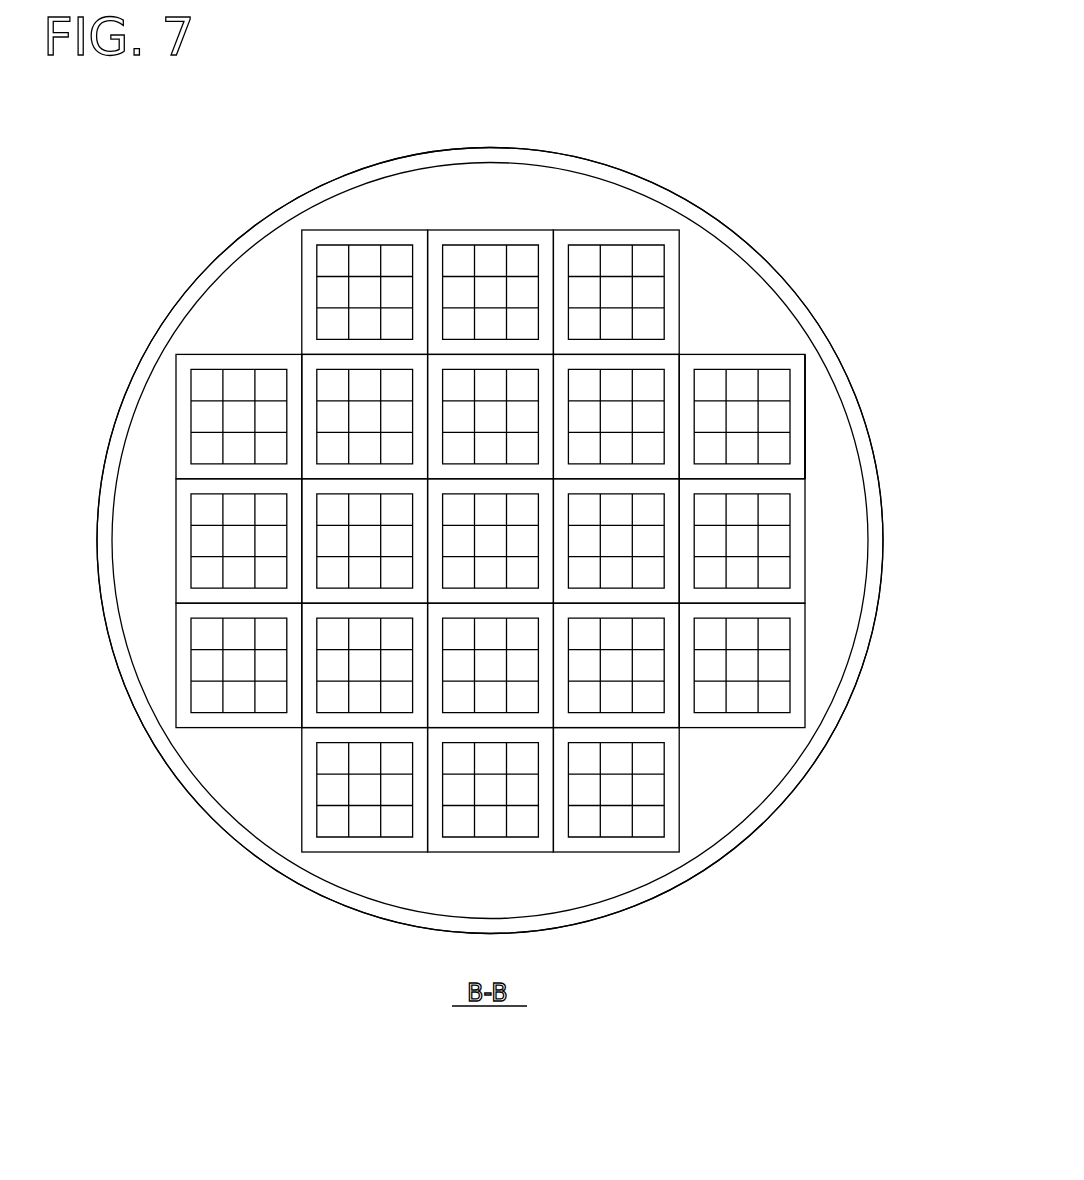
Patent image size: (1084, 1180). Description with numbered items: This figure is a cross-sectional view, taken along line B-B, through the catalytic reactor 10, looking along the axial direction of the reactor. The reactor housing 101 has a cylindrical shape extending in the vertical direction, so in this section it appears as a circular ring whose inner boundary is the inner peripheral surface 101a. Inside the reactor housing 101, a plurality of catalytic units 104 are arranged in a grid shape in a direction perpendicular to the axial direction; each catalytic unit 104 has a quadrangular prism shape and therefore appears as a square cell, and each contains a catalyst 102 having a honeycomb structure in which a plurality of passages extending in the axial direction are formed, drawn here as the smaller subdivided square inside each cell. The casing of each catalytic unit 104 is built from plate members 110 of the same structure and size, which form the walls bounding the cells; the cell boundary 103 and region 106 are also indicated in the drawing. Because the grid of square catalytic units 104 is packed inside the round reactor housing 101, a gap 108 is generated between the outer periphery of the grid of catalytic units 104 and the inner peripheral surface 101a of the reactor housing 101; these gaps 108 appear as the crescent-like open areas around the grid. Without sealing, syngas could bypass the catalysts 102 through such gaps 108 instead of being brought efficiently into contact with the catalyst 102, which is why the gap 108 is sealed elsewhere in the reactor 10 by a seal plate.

The catalytic reactor 10 is at (627, 136).
The reactor housing 101 is at (172, 323).
The inner peripheral surface 101a is at (140, 410).
The catalyst 102 is at (773, 382).
The chip block boundary 103 is at (742, 358).
The catalytic unit 104 is at (808, 410).
The peripheral region 106 is at (708, 276).
The gap 108 is at (515, 210).
The plate members 110 is at (808, 428).